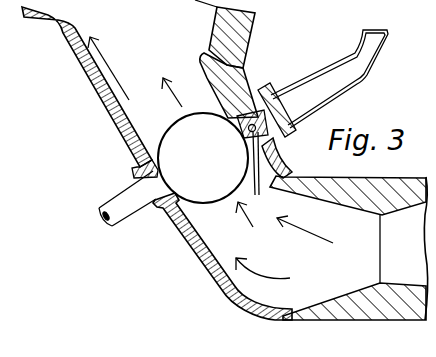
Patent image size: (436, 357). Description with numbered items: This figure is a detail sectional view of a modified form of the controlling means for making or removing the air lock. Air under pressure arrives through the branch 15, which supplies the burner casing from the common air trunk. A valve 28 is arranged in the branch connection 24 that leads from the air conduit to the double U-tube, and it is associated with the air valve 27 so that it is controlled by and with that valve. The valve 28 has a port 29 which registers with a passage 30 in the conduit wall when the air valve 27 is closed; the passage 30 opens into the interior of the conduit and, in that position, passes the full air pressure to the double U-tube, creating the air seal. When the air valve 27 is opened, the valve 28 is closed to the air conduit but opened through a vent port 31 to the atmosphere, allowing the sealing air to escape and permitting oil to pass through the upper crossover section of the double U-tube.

The branch 15 is at (118, 97).
The branch connection 24 is at (337, 70).
The air valve 27 is at (172, 140).
The valve 28 is at (283, 132).
The port 29 is at (244, 129).
The passage 30 is at (256, 170).
The vent port 31 is at (254, 123).